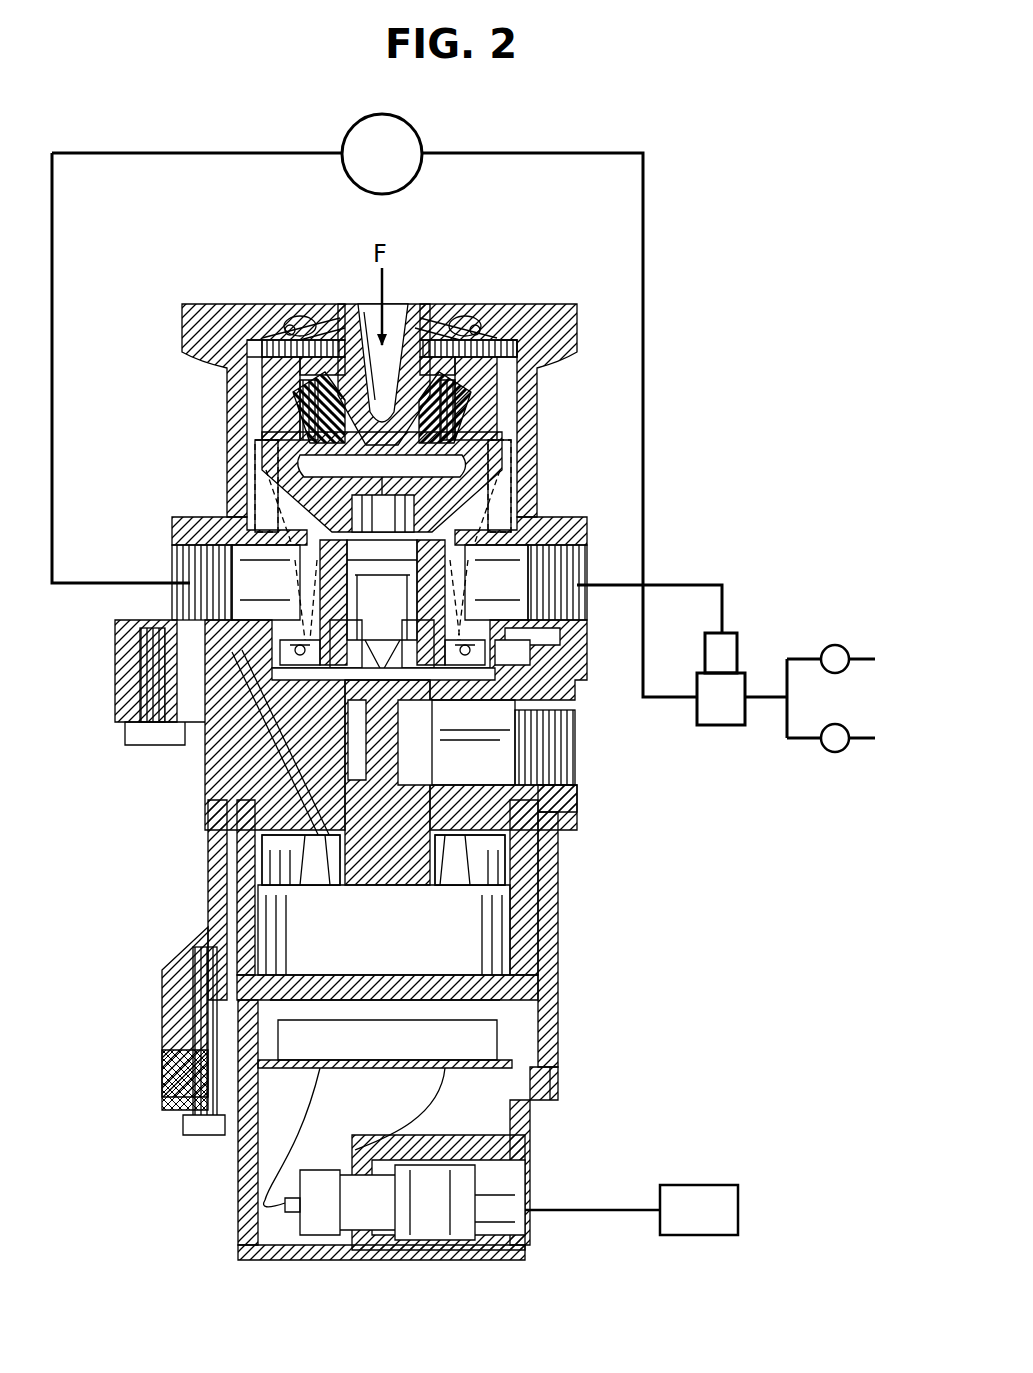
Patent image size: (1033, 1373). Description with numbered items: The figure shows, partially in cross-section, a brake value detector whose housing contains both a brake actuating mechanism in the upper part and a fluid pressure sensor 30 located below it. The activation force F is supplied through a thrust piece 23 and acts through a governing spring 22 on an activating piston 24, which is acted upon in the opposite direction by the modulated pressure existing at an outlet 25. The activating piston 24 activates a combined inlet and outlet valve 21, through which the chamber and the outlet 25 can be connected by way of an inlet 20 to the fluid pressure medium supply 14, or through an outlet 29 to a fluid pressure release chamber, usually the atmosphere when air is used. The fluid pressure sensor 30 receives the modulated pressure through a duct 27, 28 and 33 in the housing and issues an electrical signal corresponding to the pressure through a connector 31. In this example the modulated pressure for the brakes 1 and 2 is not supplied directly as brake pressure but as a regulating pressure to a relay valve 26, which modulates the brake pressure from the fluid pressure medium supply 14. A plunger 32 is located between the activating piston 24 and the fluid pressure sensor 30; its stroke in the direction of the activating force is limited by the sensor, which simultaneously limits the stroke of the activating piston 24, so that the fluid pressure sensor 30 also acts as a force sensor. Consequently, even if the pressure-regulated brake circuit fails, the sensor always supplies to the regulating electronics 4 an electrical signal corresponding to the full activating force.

The brake 1 is at (835, 652).
The brake 2 is at (835, 745).
The regulating electronics 4 is at (740, 1210).
The fluid pressure medium supply 14 is at (404, 164).
The inlet 20 is at (192, 575).
The combined inlet and outlet valve 21 is at (300, 520).
The governing spring 22 is at (318, 412).
The thrust piece 23 is at (366, 328).
The activating piston 24 is at (512, 393).
The outlet 25 is at (585, 567).
The relay valve 26 is at (740, 654).
The duct 27 is at (565, 632).
The duct 28 is at (525, 642).
The outlet 29 is at (548, 748).
The fluid pressure sensor 30 is at (570, 990).
The connector 31 is at (462, 1215).
The plunger 32 is at (405, 812).
The duct 33 is at (240, 745).